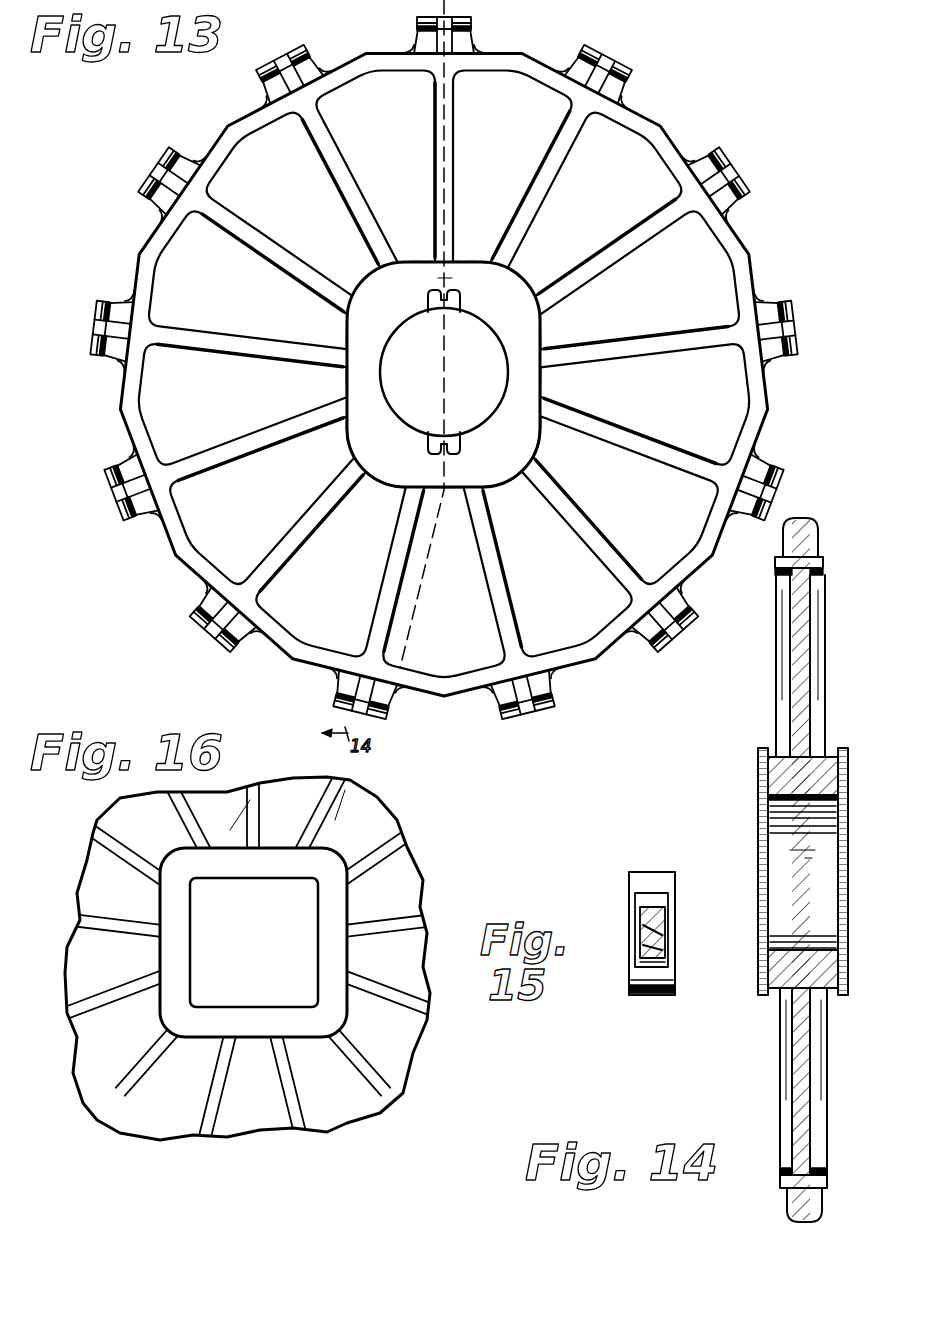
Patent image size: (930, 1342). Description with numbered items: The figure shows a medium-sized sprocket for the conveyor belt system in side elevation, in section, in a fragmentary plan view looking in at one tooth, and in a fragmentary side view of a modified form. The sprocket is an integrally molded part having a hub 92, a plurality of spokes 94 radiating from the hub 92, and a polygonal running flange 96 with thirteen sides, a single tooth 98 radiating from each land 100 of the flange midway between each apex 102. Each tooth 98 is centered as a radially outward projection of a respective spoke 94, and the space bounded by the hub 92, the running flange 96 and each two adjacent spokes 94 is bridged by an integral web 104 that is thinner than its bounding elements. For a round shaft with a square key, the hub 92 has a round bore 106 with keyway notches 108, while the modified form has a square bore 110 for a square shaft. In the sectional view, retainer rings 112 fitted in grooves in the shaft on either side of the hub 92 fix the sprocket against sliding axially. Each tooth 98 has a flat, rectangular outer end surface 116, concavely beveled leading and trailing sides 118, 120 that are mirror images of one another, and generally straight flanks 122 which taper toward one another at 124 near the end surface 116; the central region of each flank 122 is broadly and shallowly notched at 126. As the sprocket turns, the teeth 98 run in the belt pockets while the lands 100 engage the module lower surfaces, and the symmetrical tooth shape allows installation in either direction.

In FIG. 13, the hub 92 is at (377, 401).
In FIG. 16, the hub 92 is at (233, 1010).
In FIG. 13, the spokes 94 is at (230, 452).
In FIG. 16, the spokes 94 is at (400, 843).
In FIG. 13, the polygonal running flange 96 is at (148, 524).
In FIG. 15, the polygonal running flange 96 is at (649, 944).
In FIG. 13, the tooth 98 is at (640, 654).
In FIG. 15, the tooth 98 is at (666, 950).
In FIG. 13, the land 100 is at (272, 648).
In FIG. 15, the land 100 is at (632, 876).
In FIG. 13, the apex 102 is at (288, 662).
In FIG. 13, the web 104 is at (322, 604).
In FIG. 16, the web 104 is at (405, 890).
In FIG. 13, the round bore 106 is at (415, 430).
In FIG. 14, the round bore 106 is at (778, 847).
In FIG. 13, the keyway notch 108 is at (443, 316).
In FIG. 14, the keyway notch 108 is at (766, 808).
In FIG. 16, the square bore 110 is at (260, 949).
In FIG. 14, the retainer ring 112 is at (760, 770).
In FIG. 13, the outer end surface 116 is at (512, 716).
In FIG. 15, the outer end surface 116 is at (662, 935).
In FIG. 13, the leading side 118 is at (497, 705).
In FIG. 13, the trailing side 120 is at (552, 698).
In FIG. 15, the flank 122 is at (636, 905).
In FIG. 13, the taper 124 is at (213, 643).
In FIG. 15, the taper 124 is at (638, 966).
In FIG. 13, the notch 126 is at (656, 646).